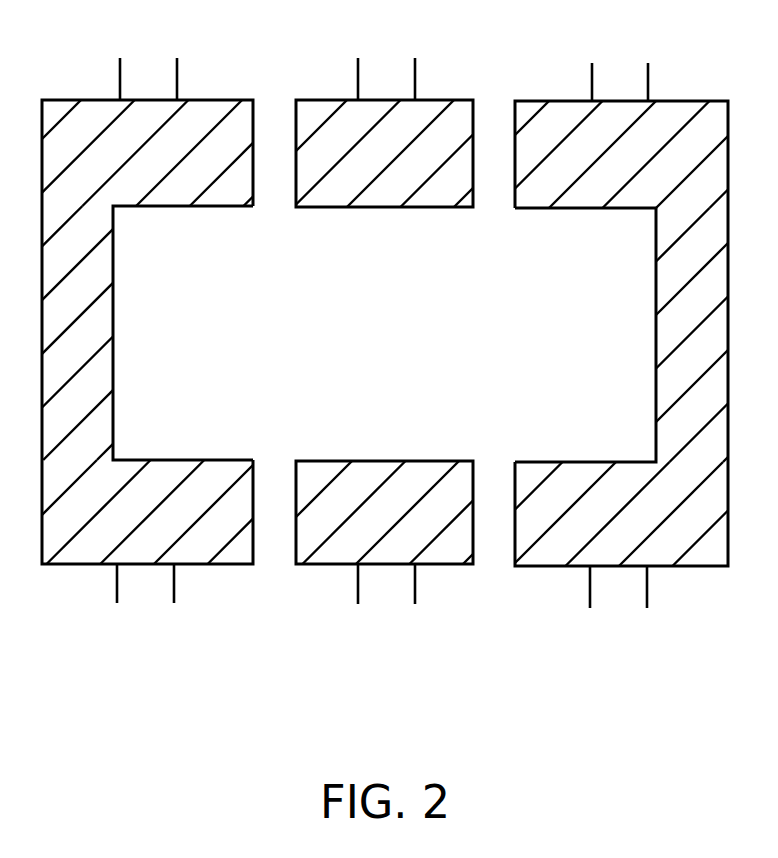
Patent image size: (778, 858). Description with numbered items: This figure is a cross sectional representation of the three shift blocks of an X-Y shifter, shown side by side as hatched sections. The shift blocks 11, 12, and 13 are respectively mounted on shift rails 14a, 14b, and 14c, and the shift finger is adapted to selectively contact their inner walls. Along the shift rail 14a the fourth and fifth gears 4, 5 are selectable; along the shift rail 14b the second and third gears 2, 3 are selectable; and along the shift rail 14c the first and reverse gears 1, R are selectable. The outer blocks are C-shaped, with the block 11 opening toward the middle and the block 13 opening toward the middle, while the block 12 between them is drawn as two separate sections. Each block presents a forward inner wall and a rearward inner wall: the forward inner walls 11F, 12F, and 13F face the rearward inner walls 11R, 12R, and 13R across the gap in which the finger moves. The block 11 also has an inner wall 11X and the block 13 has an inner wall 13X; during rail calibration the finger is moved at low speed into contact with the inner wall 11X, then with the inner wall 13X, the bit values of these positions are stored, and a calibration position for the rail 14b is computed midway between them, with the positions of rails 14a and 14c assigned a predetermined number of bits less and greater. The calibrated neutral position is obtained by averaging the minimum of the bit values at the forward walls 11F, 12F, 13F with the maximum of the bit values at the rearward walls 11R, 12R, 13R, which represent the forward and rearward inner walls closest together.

The shift block 11 is at (63, 565).
The forward inner wall of shift block 11F is at (233, 207).
The rearward inner wall of shift block 11R is at (232, 460).
The inner wall of shift block 11X is at (113, 335).
The shift block 12 is at (325, 564).
The forward inner wall of shift block 12F is at (380, 207).
The rearward inner wall of shift block 12R is at (381, 461).
The shift block 13 is at (540, 566).
The forward inner wall of shift block 13F is at (547, 208).
The rearward inner wall of shift block 13R is at (540, 462).
The inner wall of shift block 13X is at (655, 333).
The shift rail 14a is at (177, 72).
The shift rail 14b is at (415, 72).
The shift rail 14c is at (648, 78).
The first gear position 1 is at (610, 71).
The second gear position 2 is at (374, 601).
The third gear position 3 is at (376, 70).
The fourth gear position 4 is at (138, 70).
The fifth gear position 5 is at (135, 601).
The reverse gear position R is at (610, 603).